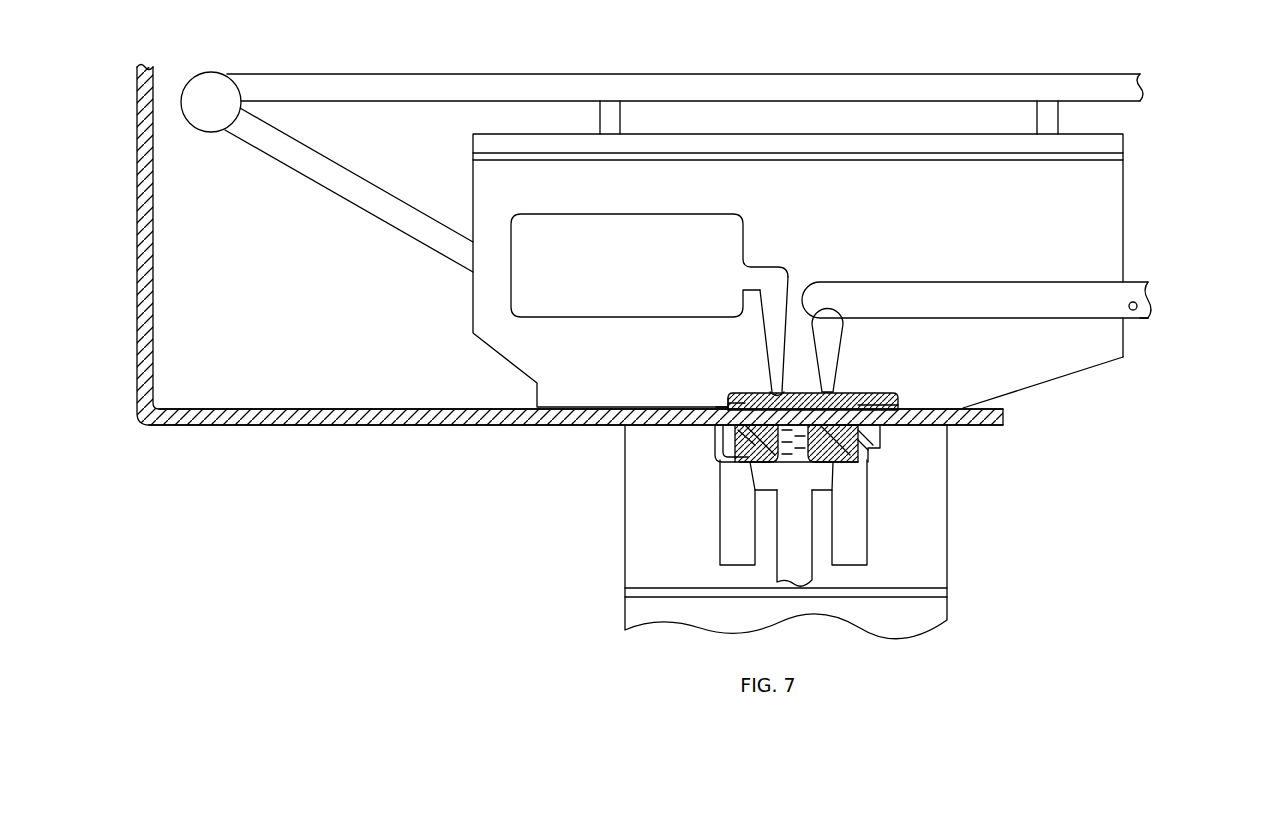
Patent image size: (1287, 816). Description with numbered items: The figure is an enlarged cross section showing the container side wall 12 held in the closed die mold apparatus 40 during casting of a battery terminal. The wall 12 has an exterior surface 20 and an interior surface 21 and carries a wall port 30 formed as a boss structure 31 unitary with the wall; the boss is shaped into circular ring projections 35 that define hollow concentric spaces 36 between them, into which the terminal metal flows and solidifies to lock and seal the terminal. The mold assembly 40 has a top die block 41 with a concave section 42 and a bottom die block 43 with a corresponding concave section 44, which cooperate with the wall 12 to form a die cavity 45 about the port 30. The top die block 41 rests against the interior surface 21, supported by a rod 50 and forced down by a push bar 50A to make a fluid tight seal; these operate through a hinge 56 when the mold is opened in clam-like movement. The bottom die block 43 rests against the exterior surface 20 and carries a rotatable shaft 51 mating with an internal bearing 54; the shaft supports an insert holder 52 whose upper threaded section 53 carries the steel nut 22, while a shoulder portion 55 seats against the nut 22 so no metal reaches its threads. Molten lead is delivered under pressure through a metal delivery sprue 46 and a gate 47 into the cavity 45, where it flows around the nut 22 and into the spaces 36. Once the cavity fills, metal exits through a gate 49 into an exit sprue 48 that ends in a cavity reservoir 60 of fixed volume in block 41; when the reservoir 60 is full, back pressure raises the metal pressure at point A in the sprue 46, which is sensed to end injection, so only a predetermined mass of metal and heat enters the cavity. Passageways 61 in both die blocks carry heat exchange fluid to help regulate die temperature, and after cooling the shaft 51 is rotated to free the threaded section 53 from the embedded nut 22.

The side wall 12 is at (570, 271).
The exterior surface 20 is at (368, 425).
The interior surface 21 is at (368, 407).
The nut 22 is at (762, 405).
The wall port 30 is at (717, 434).
The boss structure 31 is at (717, 456).
The circular ring projections 35 is at (870, 405).
The hollow concentric spaces 36 is at (845, 458).
The die mold apparatus 40 is at (1122, 386).
The top die block 41 is at (1112, 347).
The concave section 42 is at (737, 400).
The bottom die block 43 is at (932, 614).
The concave section 44 is at (848, 468).
The die cavity 45 is at (728, 407).
The metal delivery sprue 46 is at (1108, 300).
The gate 47 is at (832, 387).
The exit sprue 48 is at (778, 290).
The gate 49 is at (780, 393).
The rod 50 is at (335, 197).
The push bar 50A is at (470, 75).
The rotatable shaft 51 is at (793, 558).
The insert holder 52 is at (785, 475).
The threaded section 53 is at (858, 392).
The internal bearing 54 is at (847, 547).
The shoulder portion 55 is at (747, 462).
The hinge 56 is at (210, 80).
The cavity reservoir 60 is at (591, 213).
The passageways 61 is at (1123, 156).
The point A is at (1150, 305).